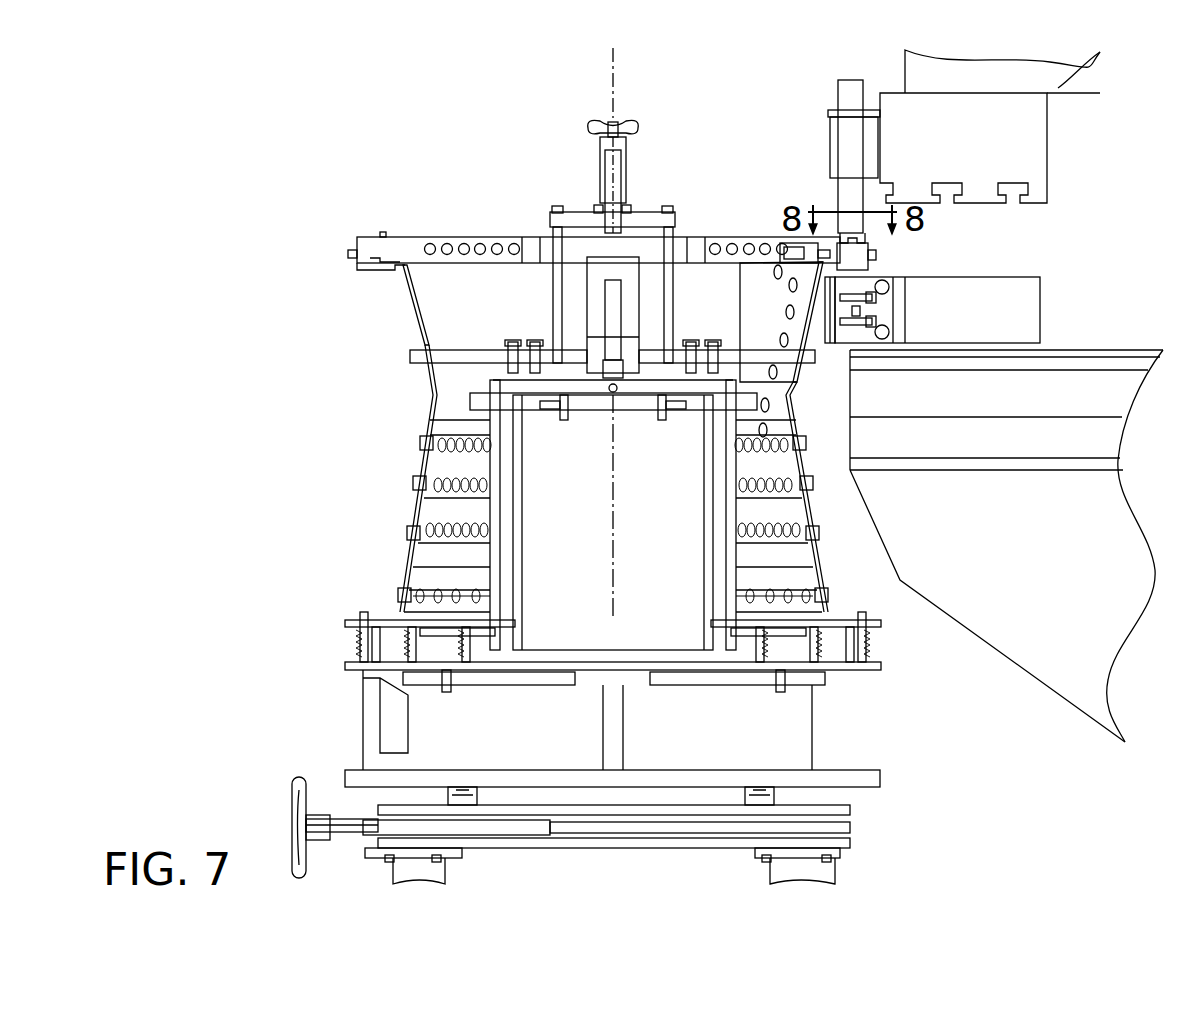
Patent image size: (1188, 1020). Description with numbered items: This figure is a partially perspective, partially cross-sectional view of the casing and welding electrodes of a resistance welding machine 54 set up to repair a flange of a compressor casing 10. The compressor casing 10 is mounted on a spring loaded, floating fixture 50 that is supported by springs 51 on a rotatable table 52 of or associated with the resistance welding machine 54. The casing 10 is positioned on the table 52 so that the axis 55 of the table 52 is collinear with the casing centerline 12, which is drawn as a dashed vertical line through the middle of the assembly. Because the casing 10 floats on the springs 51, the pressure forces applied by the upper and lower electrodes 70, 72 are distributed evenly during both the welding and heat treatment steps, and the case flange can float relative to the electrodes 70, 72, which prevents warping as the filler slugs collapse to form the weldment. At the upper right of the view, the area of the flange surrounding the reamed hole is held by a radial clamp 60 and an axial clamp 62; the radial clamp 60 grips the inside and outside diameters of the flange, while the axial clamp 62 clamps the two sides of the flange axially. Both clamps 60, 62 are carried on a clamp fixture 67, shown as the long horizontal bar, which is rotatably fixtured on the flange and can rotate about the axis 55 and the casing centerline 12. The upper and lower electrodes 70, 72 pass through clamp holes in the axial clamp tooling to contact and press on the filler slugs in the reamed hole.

The compressor casing 10 is at (432, 470).
The casing centerline 12 is at (618, 516).
The floating fixture 50 is at (524, 557).
The springs 51 is at (830, 652).
The rotatable table 52 is at (820, 728).
The resistance welding machine 54 is at (1060, 82).
The axis of the table 55 is at (620, 75).
The radial clamp 60 is at (783, 233).
The axial clamp 62 is at (880, 203).
The clamp fixture 67 is at (410, 236).
The upper electrode 70 is at (870, 243).
The lower electrode 72 is at (875, 284).